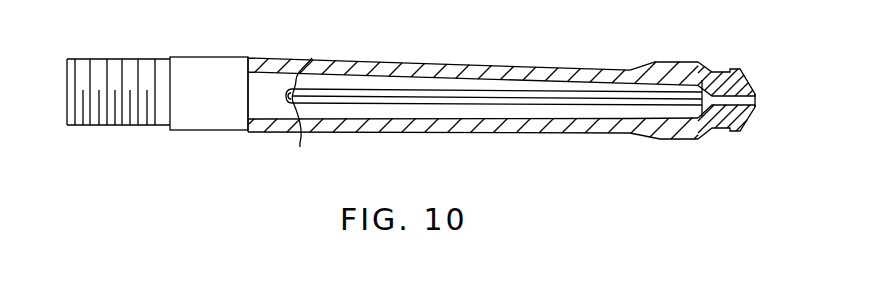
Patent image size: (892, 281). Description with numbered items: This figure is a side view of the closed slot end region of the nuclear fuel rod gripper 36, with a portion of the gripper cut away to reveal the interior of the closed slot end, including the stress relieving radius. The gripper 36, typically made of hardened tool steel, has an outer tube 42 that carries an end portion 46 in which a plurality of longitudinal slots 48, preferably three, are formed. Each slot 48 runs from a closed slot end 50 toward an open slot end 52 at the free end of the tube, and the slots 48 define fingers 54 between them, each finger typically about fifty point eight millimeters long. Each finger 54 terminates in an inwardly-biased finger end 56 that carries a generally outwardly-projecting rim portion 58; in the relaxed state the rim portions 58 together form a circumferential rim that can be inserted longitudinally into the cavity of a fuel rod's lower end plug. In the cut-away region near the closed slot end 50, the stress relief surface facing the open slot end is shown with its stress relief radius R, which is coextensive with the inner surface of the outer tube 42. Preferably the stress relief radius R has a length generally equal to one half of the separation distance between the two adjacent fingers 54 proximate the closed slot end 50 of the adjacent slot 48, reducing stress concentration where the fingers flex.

The nuclear fuel rod gripper 36 is at (238, 168).
The outer tube 42 is at (202, 75).
The end portion 46 is at (500, 53).
The longitudinal slot 48 is at (387, 96).
The closed slot end 50 is at (312, 58).
The open slot end 52 is at (757, 102).
The finger 54 is at (605, 75).
The inwardly-biased finger end 56 is at (704, 137).
The outwardly-projecting rim portion 58 is at (736, 66).
The stress relief radius R is at (301, 131).